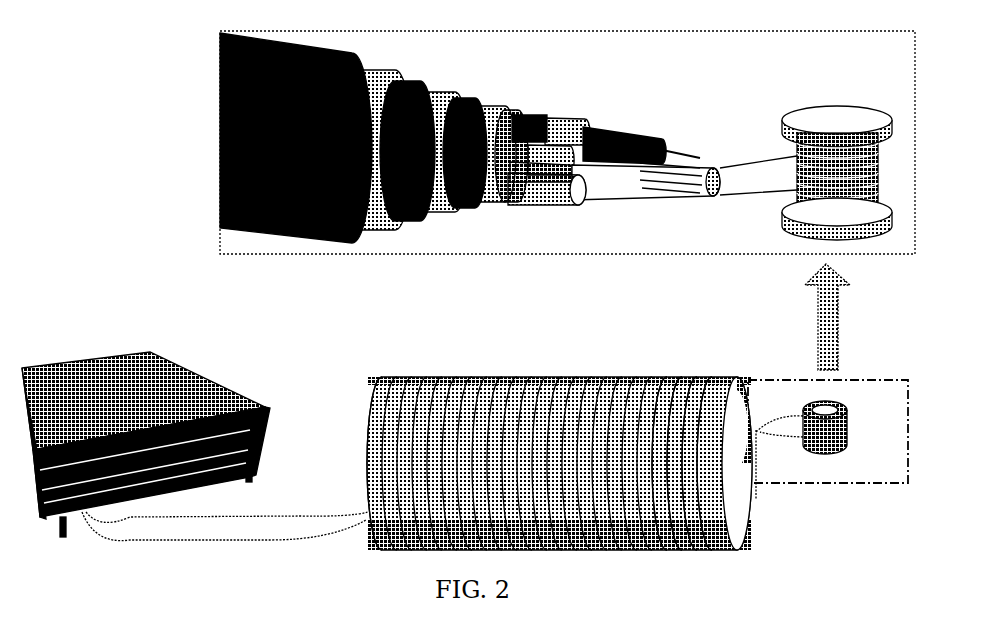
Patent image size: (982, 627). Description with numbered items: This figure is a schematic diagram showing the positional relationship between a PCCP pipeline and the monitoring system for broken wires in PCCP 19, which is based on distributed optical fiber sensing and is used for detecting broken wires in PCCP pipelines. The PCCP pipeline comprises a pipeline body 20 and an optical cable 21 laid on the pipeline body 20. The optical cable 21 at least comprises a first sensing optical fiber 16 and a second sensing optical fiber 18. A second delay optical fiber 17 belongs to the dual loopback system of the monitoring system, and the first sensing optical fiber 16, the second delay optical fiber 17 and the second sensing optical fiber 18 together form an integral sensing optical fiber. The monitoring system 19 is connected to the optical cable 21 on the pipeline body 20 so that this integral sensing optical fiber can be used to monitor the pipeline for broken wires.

The first sensing optical fiber 16 is at (642, 160).
The second delay optical fiber 17 is at (823, 197).
The second sensing optical fiber 18 is at (638, 176).
The monitoring system for broken wires in PCCP 19 is at (192, 366).
The pipeline body 20 is at (432, 386).
The optical cable 21 is at (594, 378).